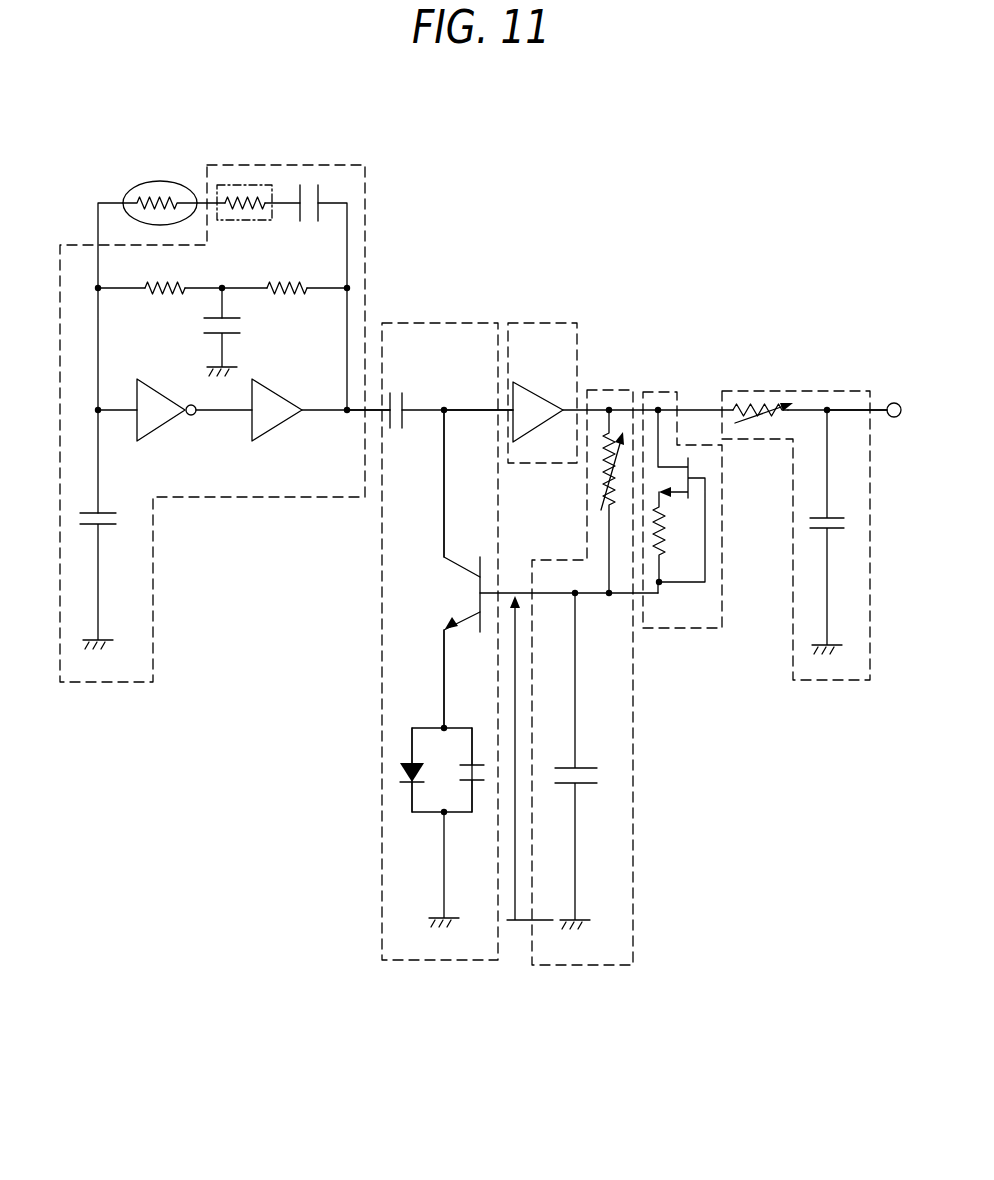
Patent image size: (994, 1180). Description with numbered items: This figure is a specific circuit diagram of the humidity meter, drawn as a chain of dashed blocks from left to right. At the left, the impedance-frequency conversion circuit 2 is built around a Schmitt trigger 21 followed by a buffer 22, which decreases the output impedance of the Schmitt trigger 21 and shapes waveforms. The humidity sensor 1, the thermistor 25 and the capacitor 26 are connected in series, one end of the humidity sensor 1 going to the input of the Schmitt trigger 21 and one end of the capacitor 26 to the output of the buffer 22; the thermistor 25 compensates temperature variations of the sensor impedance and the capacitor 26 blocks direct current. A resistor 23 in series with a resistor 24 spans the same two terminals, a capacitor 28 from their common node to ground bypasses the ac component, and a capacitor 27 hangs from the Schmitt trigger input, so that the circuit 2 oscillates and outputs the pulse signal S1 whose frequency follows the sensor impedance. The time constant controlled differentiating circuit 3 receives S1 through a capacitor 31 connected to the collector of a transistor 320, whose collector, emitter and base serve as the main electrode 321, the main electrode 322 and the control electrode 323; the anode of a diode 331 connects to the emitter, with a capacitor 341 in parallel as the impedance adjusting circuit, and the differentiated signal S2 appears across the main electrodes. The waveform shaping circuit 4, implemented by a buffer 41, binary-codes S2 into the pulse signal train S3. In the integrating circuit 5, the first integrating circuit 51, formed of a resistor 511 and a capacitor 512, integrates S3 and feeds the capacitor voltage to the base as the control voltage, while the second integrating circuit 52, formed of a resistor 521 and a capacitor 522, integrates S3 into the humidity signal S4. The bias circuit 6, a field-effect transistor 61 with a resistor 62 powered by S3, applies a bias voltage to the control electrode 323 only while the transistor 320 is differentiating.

The humidity sensor 1 is at (160, 181).
The impedance-frequency conversion circuit 2 is at (286, 163).
The Schmitt trigger 21 is at (160, 427).
The buffer 22 is at (276, 427).
The resistor 23 is at (174, 284).
The resistor 24 is at (294, 284).
The thermistor 25 is at (246, 186).
The capacitor 26 is at (320, 193).
The capacitor 27 is at (108, 527).
The capacitor 28 is at (242, 323).
The time constant controlled differentiating circuit 3 is at (432, 322).
The capacitor 31 is at (405, 396).
The transistor 320 is at (517, 569).
The main electrode 321 is at (444, 525).
The main electrode 322 is at (444, 660).
The control electrode 323 is at (494, 593).
The diode 331 is at (410, 788).
The capacitor 341 is at (478, 788).
The waveform shaping circuit 4 is at (530, 322).
The buffer 41 is at (532, 396).
The integrating circuit 5 is at (730, 316).
The first integrating circuit 51 is at (596, 688).
The resistor 511 is at (605, 469).
The capacitor 512 is at (585, 790).
The second integrating circuit 52 is at (727, 389).
The resistor 521 is at (757, 400).
The capacitor 522 is at (841, 530).
The bias circuit 6 is at (697, 628).
The field-effect transistor 61 is at (697, 470).
The resistor 62 is at (665, 523).
The pulse signal S1 is at (369, 408).
The differentiated signal S2 is at (473, 406).
The pulse signal train S3 is at (596, 406).
The humidity signal S4 is at (856, 408).